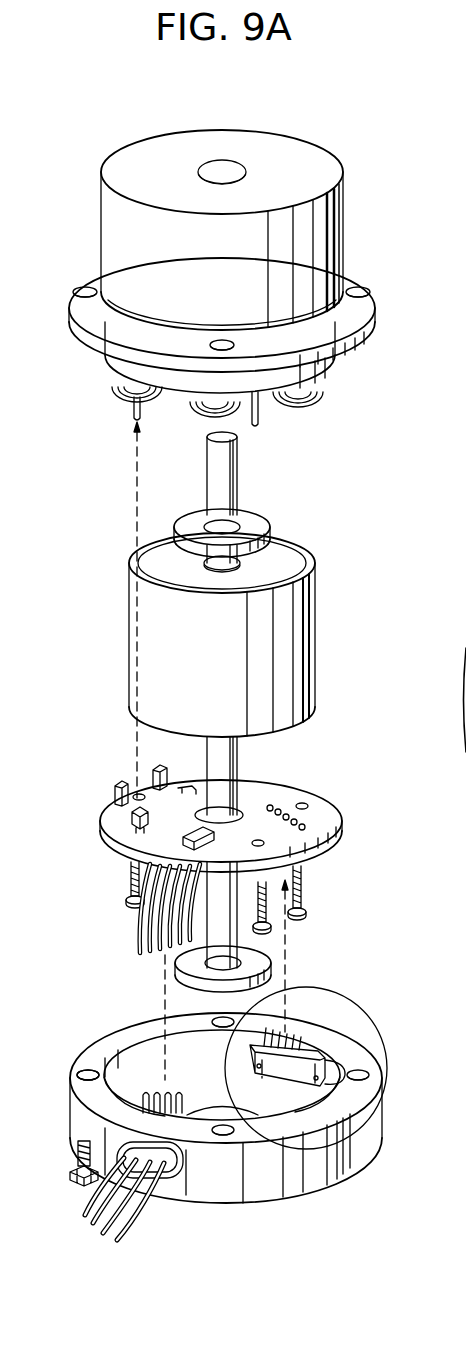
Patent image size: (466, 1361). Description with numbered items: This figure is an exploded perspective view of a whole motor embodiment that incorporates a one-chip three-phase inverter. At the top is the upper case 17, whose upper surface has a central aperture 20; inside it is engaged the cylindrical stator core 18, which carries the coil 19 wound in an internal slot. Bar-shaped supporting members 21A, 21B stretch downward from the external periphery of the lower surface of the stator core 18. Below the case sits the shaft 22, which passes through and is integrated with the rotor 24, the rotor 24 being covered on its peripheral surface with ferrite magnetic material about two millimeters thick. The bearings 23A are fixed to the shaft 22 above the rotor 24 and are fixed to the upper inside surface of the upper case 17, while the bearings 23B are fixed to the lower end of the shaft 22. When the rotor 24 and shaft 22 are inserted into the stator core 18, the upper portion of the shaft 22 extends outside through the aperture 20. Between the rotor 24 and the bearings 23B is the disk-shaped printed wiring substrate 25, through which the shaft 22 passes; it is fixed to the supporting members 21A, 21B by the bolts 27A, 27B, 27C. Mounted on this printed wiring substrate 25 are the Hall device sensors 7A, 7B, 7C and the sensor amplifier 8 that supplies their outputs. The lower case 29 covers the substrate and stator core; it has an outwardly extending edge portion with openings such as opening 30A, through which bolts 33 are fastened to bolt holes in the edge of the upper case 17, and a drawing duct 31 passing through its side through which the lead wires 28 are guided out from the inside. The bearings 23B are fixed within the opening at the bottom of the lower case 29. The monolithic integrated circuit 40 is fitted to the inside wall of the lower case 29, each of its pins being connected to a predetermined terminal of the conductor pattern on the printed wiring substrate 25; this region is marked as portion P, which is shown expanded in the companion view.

The upper case 17 is at (336, 220).
The stator core 18 is at (338, 358).
The coil 19 is at (318, 400).
The aperture 20 is at (222, 172).
The supporting member 21A is at (131, 414).
The supporting member 21B is at (258, 426).
The shaft 22 is at (238, 488).
The bearings 23A is at (270, 526).
The bearings 23B is at (176, 978).
The rotor 24 is at (305, 602).
The printed wiring substrate 25 is at (336, 808).
The Hall device sensor 7A is at (152, 768).
The Hall device sensor 7B is at (114, 790).
The Hall device sensor 7C is at (131, 814).
The sensor amplifier 8 is at (182, 840).
The bolt 27A is at (130, 886).
The bolt 27B is at (268, 914).
The bolt 27C is at (304, 886).
The lead wires 28 is at (130, 1226).
The lower case 29 is at (316, 1176).
The opening 30A is at (86, 1070).
The drawing duct 31 is at (182, 1168).
The bolt 33 is at (76, 1152).
The monolithic integrated circuit 40 is at (296, 1042).
The portion P is at (388, 1072).